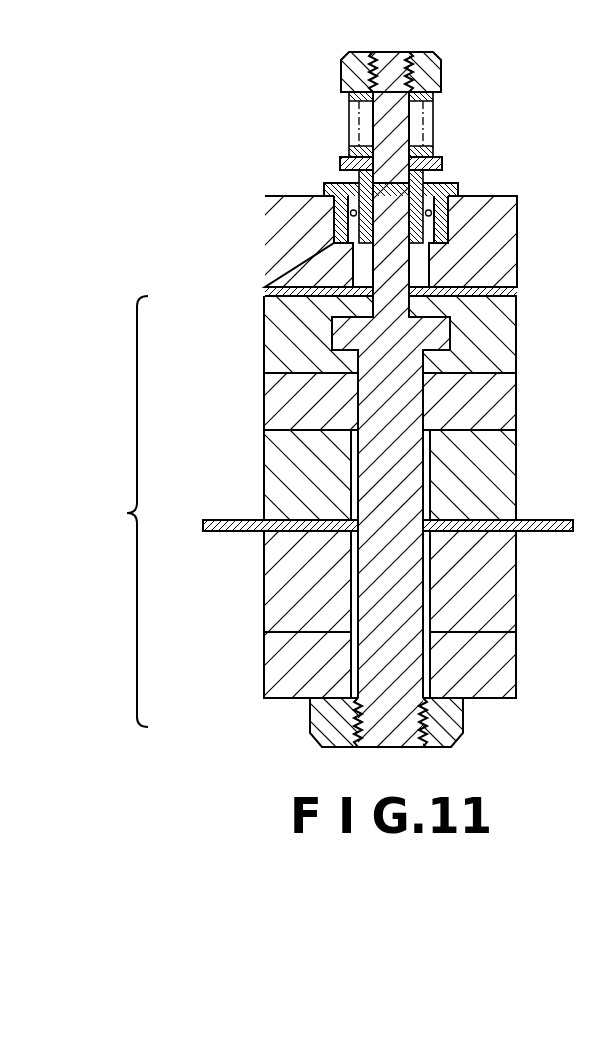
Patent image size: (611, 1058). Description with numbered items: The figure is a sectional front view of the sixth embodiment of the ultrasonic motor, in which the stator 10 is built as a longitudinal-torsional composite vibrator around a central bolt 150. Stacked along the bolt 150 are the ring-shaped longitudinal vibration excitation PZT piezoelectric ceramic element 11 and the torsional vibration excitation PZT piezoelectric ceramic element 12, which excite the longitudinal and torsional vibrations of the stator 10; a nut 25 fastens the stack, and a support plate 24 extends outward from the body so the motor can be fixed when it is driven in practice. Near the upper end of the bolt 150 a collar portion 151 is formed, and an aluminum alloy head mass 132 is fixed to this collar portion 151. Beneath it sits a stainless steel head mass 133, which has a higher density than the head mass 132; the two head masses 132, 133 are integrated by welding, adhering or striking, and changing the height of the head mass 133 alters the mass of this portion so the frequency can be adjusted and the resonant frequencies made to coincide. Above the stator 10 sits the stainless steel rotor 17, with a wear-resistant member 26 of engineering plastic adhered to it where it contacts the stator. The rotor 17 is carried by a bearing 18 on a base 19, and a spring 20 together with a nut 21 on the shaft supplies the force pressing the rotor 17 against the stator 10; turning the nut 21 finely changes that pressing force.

The stator 10 is at (119, 511).
The longitudinal vibration excitation PZT piezoelectric ceramic element 11 is at (282, 480).
The torsional vibration excitation PZT piezoelectric ceramic element 12 is at (288, 605).
The rotor 17 is at (285, 222).
The bearing 18 is at (327, 184).
The base 19 is at (342, 160).
The spring 20 is at (434, 98).
The nut 21 is at (350, 73).
The support plate 24 is at (227, 532).
The nut 25 is at (328, 727).
The wear-resistant member 26 is at (298, 288).
The head mass 132 is at (283, 350).
The head mass 133 is at (283, 405).
The bolt 150 is at (393, 670).
The collar portion 151 is at (352, 333).